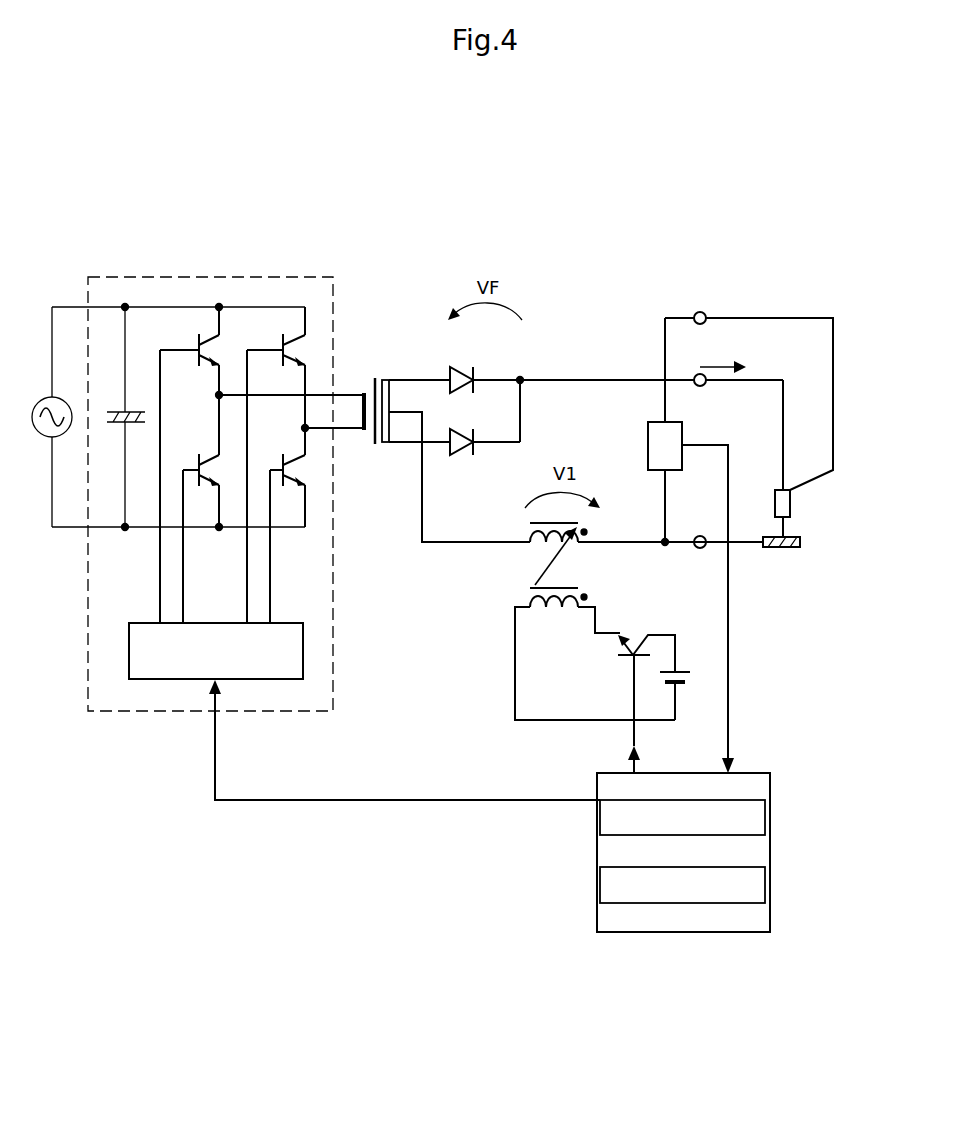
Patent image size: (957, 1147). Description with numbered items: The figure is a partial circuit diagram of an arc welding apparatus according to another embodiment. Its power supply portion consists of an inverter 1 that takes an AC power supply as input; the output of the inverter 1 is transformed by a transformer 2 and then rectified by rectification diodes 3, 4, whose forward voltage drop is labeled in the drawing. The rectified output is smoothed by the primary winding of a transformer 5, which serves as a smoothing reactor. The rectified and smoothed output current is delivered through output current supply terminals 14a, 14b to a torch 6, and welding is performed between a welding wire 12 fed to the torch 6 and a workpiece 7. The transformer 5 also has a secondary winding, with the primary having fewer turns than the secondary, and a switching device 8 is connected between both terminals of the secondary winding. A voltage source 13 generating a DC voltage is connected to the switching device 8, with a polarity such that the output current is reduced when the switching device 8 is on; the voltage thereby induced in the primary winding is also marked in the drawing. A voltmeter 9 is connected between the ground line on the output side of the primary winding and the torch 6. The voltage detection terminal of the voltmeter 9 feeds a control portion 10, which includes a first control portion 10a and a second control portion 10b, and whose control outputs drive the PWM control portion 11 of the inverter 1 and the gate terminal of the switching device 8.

The inverter 1 is at (333, 277).
The transformer 2 is at (375, 378).
The rectification diode 3 is at (465, 362).
The rectification diode 4 is at (462, 462).
The transformer 5 is at (577, 563).
The torch 6 is at (792, 503).
The workpiece 7 is at (785, 550).
The switching device 8 is at (645, 635).
The voltmeter 9 is at (648, 418).
The control portion 10 is at (770, 773).
The first control portion 10a is at (750, 818).
The second control portion 10b is at (750, 878).
The PWM control portion 11 is at (303, 624).
The welding wire 12 is at (790, 521).
The voltage source 13 is at (680, 665).
The output current supply terminal 14a is at (700, 388).
The output current supply terminal 14b is at (700, 535).